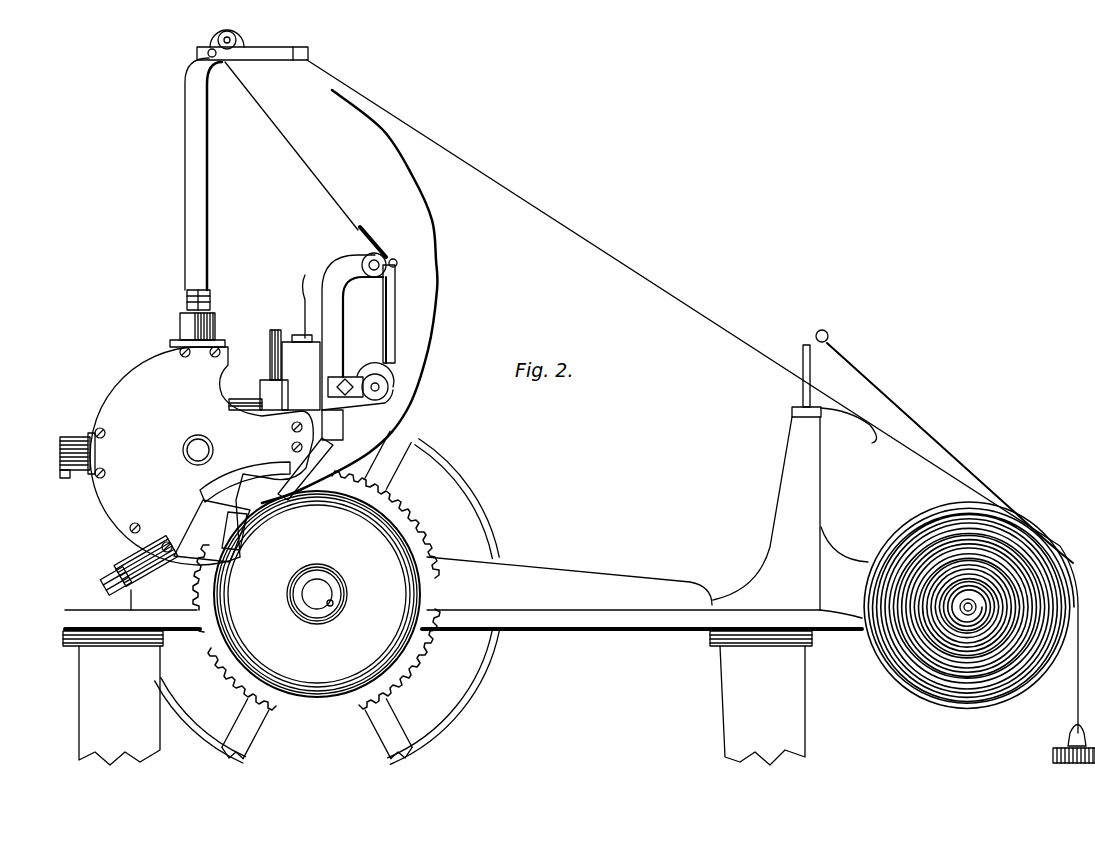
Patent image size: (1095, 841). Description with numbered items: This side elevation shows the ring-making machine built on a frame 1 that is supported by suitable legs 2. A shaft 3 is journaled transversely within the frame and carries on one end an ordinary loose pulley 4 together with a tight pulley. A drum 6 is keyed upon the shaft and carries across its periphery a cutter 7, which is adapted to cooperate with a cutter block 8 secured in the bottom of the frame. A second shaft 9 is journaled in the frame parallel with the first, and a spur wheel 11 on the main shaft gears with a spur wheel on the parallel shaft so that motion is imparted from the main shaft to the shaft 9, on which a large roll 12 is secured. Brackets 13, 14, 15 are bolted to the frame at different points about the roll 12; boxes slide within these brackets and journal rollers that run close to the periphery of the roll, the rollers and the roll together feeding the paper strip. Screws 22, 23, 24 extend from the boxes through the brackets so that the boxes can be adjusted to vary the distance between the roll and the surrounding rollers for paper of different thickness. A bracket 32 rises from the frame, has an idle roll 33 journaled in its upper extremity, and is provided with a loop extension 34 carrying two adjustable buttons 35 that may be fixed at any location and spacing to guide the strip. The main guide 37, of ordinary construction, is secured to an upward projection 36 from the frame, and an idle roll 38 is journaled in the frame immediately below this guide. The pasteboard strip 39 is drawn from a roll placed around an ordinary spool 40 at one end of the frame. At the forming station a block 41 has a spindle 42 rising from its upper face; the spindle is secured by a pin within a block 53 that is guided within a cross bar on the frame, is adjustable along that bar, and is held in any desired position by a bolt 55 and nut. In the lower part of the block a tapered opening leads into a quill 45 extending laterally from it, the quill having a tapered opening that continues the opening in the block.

The frame 1 is at (512, 572).
The legs 2 is at (437, 698).
The shaft 3 is at (325, 594).
The loose pulley 4 is at (480, 688).
The drum 6 is at (421, 587).
The cutter 7 is at (238, 528).
The cutter block 8 is at (292, 478).
The shaft 9 is at (190, 450).
The spur wheel 11 is at (410, 668).
The roll 12 is at (232, 490).
The bracket 13 is at (120, 551).
The bracket 14 is at (75, 436).
The bracket 15 is at (185, 326).
The screw 22 is at (110, 582).
The screw 23 is at (66, 474).
The screw 24 is at (210, 298).
The bracket 32 is at (207, 210).
The idle roll 33 is at (216, 36).
The loop extension 34 is at (267, 60).
The adjustable buttons 35 is at (292, 50).
The upward projection 36 is at (334, 322).
The main guide 37 is at (390, 307).
The idle roll 38 is at (395, 392).
The pasteboard strip 39 is at (716, 325).
The spool 40 is at (962, 608).
The block 41 is at (262, 382).
The spindle 42 is at (292, 341).
The quill 45 is at (244, 393).
The block 53 is at (268, 345).
The bolt 55 is at (304, 292).